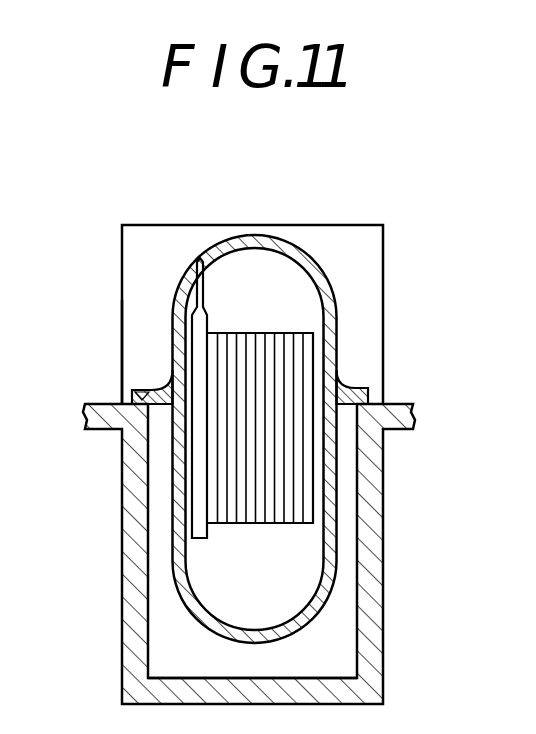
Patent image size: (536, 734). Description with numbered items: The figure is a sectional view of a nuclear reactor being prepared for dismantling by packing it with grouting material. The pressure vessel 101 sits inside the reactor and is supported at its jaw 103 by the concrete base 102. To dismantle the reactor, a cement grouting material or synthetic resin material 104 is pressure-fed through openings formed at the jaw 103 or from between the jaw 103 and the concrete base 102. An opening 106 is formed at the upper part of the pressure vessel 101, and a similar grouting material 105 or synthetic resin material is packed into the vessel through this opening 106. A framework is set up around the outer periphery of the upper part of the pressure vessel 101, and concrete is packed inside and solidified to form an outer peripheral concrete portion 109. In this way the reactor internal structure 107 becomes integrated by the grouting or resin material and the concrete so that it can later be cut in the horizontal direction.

The pressure vessel 101 is at (336, 330).
The concrete base 102 is at (374, 507).
The jaw 103 is at (133, 390).
The cement grouting material or synthetic resin material 104 is at (338, 619).
The grouting material 105 is at (329, 290).
The opening 106 is at (282, 276).
The reactor internal structure 107 is at (171, 278).
The outer peripheral concrete portion 109 is at (333, 249).